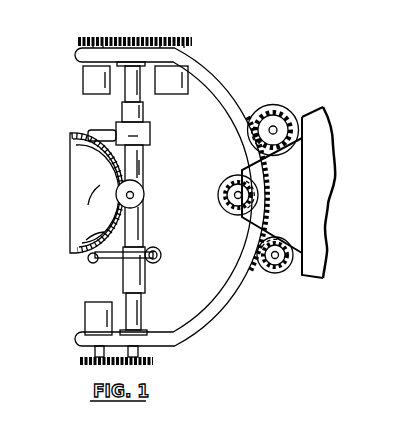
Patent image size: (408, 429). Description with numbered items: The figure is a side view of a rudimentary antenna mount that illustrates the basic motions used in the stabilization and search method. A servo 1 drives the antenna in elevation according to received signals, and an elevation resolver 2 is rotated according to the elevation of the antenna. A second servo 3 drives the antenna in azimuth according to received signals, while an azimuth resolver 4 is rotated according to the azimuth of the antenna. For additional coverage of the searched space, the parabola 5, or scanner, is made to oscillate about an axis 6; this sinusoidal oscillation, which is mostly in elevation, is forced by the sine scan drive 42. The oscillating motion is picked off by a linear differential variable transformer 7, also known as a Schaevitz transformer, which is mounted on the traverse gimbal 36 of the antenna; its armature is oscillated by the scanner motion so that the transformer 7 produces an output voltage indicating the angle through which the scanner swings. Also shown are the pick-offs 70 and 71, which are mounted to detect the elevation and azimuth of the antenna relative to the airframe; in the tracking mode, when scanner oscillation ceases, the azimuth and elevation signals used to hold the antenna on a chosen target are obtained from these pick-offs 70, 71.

The servo 1 is at (284, 108).
The elevation resolver 2 is at (277, 275).
The servo 3 is at (188, 52).
The azimuth resolver 4 is at (87, 319).
The parabola 5 is at (93, 133).
The axis 6 is at (137, 194).
The linear differential variable transformer 7 is at (150, 131).
The traverse gimbal 36 is at (141, 159).
The sine scan drive 42 is at (159, 251).
The pick-off 70 is at (90, 78).
The pick-off 71 is at (228, 180).